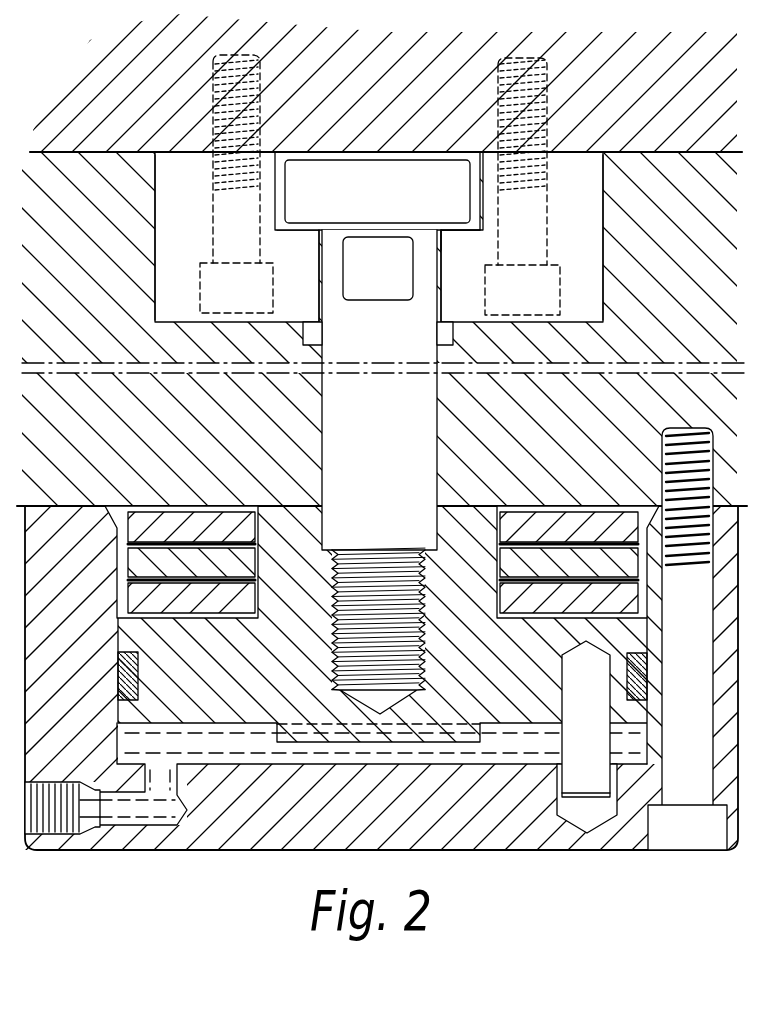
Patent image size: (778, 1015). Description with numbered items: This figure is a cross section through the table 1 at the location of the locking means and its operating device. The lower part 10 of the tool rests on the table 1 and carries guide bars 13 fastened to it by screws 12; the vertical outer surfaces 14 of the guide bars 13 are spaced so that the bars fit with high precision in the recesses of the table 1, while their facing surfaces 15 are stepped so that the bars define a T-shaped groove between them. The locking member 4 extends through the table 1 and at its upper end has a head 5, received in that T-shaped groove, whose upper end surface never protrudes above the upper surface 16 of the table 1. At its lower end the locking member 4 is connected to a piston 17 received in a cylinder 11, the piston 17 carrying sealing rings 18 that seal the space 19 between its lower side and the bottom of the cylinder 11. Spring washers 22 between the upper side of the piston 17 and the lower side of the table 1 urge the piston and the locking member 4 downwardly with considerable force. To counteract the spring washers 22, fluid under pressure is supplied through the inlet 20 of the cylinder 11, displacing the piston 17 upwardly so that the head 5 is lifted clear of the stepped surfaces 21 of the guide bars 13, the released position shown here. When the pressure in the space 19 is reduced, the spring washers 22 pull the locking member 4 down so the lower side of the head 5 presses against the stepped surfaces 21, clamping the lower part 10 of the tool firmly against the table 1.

The table 1 is at (659, 312).
The locking member 4 is at (418, 460).
The head 5 is at (389, 206).
The lower part of the tool 10 is at (349, 101).
The cylinder 11 is at (80, 652).
The screws 12 is at (222, 222).
The guide bars 13 is at (167, 293).
The vertical outer surfaces 14 is at (153, 201).
The surfaces facing each other 15 is at (440, 292).
The upper surface of the table 16 is at (693, 153).
The piston 17 is at (268, 682).
The sealing rings 18 is at (140, 673).
The space 19 is at (233, 758).
The inlet 20 is at (152, 815).
The stepped surfaces 21 is at (467, 233).
The spring washers 22 is at (245, 527).